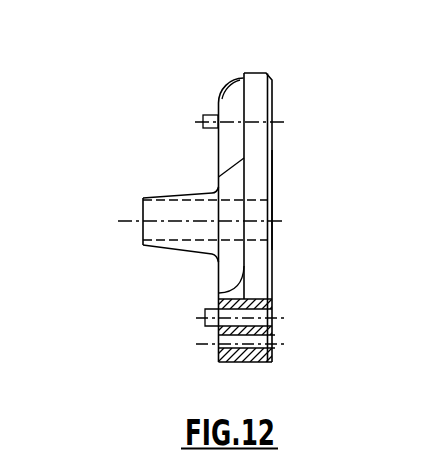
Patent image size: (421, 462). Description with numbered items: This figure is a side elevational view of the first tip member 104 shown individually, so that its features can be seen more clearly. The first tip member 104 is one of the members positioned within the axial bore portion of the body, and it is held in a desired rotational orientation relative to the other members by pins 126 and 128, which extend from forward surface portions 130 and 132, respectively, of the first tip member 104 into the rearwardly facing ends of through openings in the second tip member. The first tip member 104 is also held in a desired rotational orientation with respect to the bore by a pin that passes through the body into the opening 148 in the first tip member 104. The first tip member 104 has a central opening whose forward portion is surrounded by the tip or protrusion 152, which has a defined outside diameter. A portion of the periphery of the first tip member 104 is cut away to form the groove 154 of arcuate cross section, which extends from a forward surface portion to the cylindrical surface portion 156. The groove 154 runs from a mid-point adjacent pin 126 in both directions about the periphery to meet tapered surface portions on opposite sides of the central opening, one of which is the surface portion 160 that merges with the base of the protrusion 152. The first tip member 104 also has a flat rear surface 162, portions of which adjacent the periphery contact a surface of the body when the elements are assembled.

The first tip member 104 is at (207, 370).
The pin 126 is at (204, 115).
The pin 128 is at (206, 327).
The forward surface portion 130 is at (218, 160).
The forward surface portion 132 is at (219, 300).
The opening 148 is at (275, 348).
The tip or protrusion 152 is at (143, 233).
The groove 154 is at (233, 90).
The cylindrical surface portion 156 is at (251, 82).
The surface portion 160 is at (218, 268).
The rear surface 162 is at (273, 196).